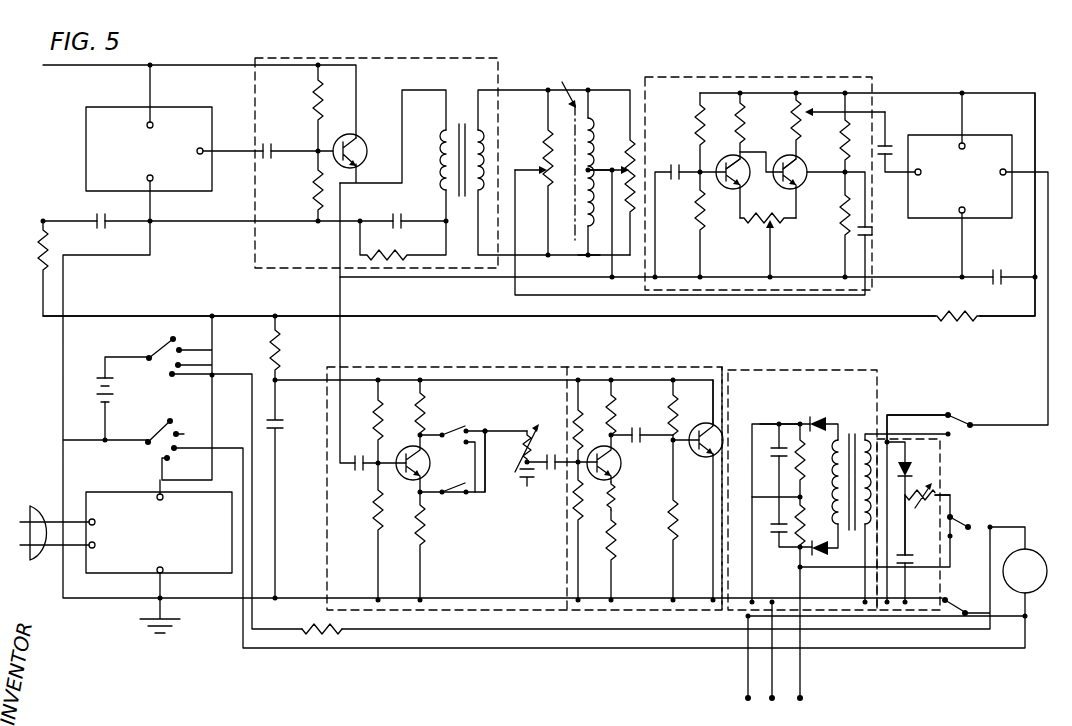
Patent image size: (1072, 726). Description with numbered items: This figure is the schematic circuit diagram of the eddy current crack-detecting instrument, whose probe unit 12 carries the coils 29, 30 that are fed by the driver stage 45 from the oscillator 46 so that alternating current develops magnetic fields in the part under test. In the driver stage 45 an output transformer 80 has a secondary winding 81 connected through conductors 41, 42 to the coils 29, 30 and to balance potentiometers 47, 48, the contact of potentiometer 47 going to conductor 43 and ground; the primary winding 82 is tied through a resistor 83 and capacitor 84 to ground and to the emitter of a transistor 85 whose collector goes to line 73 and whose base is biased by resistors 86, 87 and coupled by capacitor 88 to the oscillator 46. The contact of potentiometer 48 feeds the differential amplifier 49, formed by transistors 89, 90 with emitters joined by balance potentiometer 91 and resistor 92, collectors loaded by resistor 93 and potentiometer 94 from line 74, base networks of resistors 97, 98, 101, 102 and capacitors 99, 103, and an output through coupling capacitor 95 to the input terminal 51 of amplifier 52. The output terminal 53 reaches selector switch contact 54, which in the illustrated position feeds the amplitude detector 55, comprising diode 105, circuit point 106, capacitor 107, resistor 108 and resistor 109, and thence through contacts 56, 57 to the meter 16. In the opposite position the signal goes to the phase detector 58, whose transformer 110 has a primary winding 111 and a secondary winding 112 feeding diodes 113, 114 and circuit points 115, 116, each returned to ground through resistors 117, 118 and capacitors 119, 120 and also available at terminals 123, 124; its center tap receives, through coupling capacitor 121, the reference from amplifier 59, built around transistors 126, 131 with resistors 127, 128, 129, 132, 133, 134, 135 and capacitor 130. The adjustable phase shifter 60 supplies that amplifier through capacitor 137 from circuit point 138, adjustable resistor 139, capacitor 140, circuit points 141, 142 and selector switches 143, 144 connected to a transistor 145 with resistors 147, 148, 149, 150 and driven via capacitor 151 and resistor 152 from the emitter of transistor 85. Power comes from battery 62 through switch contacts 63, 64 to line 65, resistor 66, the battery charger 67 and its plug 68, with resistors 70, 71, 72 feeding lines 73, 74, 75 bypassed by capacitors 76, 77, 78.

The probe unit 12 is at (562, 151).
The meter 16 is at (1036, 586).
The coil 29 is at (595, 105).
The coil 30 is at (586, 222).
The conductor 41 is at (593, 118).
The conductor 42 is at (590, 246).
The conductor 43 is at (598, 168).
The driver stage 45 is at (360, 58).
The oscillator 46 is at (178, 107).
The balance potentiometer 47 is at (634, 166).
The balance potentiometer 48 is at (542, 140).
The differential amplifier 49 is at (703, 73).
The input terminal 51 is at (905, 178).
The amplifier 52 is at (990, 134).
The output terminal 53 is at (1010, 172).
The selector switch contact 54 is at (966, 414).
The amplitude detector 55 is at (942, 462).
The selector switch contact 56 is at (972, 522).
The selector switch contact 57 is at (950, 598).
The phase detector 58 is at (844, 370).
The amplifier 59 is at (662, 368).
The adjustable phase shifter 60 is at (476, 368).
The battery 62 is at (97, 386).
The selector switch contact 63 is at (151, 353).
The selector switch contact 64 is at (148, 436).
The line 65 is at (196, 316).
The resistor 66 is at (334, 636).
The battery charger 67 is at (122, 494).
The plug 68 is at (42, 508).
The resistor 70 is at (47, 248).
The resistor 71 is at (957, 311).
The resistor 72 is at (282, 350).
The line 73 is at (84, 68).
The line 74 is at (1025, 310).
The line 75 is at (404, 368).
The capacitor 76 is at (95, 219).
The capacitor 77 is at (995, 270).
The capacitor 78 is at (279, 431).
The output transformer 80 is at (462, 124).
The secondary winding 81 is at (484, 162).
The primary winding 82 is at (441, 163).
The resistor 83 is at (390, 254).
The capacitor 84 is at (394, 219).
The transistor 85 is at (363, 142).
The resistor 86 is at (329, 108).
The resistor 87 is at (314, 196).
The capacitor 88 is at (271, 150).
The transistor 89 is at (737, 181).
The transistor 90 is at (773, 185).
The balance potentiometer 91 is at (742, 222).
The resistor 92 is at (768, 262).
The resistor 93 is at (747, 131).
The potentiometer 94 is at (800, 110).
The coupling capacitor 95 is at (890, 146).
The resistor 97 is at (694, 114).
The resistor 98 is at (694, 224).
The capacitor 99 is at (675, 181).
The resistor 101 is at (840, 140).
The resistor 102 is at (840, 224).
The coupling capacitor 103 is at (856, 236).
The diode 105 is at (909, 467).
The circuit point 106 is at (906, 512).
The capacitor 107 is at (910, 558).
The resistor 108 is at (945, 497).
The resistor 109 is at (888, 420).
The transformer 110 is at (852, 472).
The primary winding 111 is at (865, 530).
The secondary winding 112 is at (804, 496).
The diode 113 is at (821, 415).
The diode 114 is at (820, 557).
The circuit point 115 is at (779, 420).
The circuit point 116 is at (797, 549).
The resistor 117 is at (803, 452).
The resistor 118 is at (804, 514).
The capacitor 119 is at (778, 440).
The capacitor 120 is at (713, 560).
The coupling capacitor 121 is at (775, 520).
The terminal 123 is at (746, 696).
The terminal 124 is at (806, 696).
The transistor 126 is at (704, 458).
The resistor 127 is at (677, 530).
The resistor 128 is at (668, 402).
The resistor 129 is at (617, 500).
The capacitor 130 is at (640, 442).
The transistor 131 is at (618, 474).
The resistor 132 is at (620, 418).
The resistor 133 is at (618, 540).
The resistor 134 is at (575, 416).
The resistor 135 is at (570, 522).
The capacitor 137 is at (551, 472).
The circuit point 138 is at (520, 473).
The adjustable resistor 139 is at (519, 441).
The capacitor 140 is at (516, 468).
The circuit point 141 is at (485, 430).
The circuit point 142 is at (476, 498).
The selector switch 143 is at (448, 430).
The selector switch 144 is at (450, 500).
The transistor 145 is at (432, 461).
The resistor 147 is at (416, 412).
The resistor 148 is at (414, 536).
The resistor 149 is at (352, 446).
The resistor 150 is at (372, 510).
The capacitor 151 is at (357, 471).
The resistor 152 is at (373, 408).